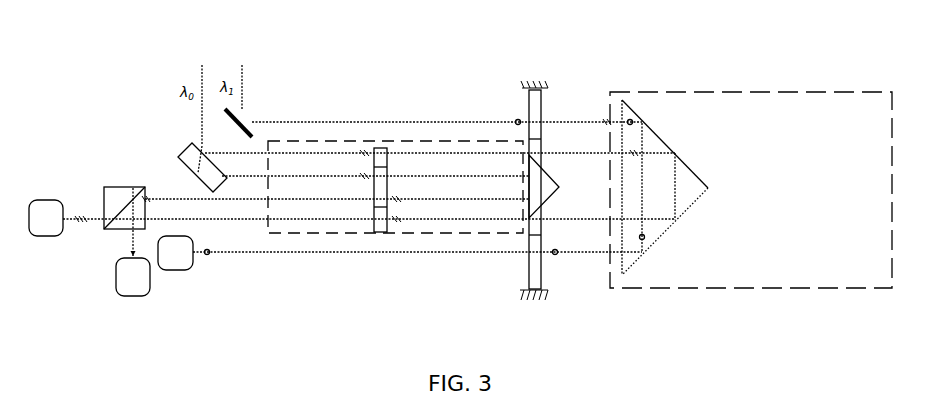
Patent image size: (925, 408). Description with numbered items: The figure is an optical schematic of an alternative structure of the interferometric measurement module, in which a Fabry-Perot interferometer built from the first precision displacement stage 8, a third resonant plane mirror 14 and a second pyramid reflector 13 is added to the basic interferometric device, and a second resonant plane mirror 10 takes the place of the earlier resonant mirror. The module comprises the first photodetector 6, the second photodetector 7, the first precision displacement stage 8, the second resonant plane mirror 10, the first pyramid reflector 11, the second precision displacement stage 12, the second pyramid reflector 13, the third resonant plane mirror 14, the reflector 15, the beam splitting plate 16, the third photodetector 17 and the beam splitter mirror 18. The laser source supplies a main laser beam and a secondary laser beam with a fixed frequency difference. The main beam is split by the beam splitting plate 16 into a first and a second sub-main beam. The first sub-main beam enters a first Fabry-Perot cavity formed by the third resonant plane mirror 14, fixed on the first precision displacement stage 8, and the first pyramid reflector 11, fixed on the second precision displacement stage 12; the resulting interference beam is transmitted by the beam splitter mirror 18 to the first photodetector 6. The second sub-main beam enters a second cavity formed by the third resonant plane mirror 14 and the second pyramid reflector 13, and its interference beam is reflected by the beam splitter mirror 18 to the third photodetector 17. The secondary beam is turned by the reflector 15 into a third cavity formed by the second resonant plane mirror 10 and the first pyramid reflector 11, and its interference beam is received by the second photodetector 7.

The first photodetector 6 is at (47, 197).
The second photodetector 7 is at (176, 233).
The first precision displacement stage 8 is at (310, 139).
The second resonant plane mirror 10 is at (535, 84).
The first pyramid reflector 11 is at (663, 137).
The second precision displacement stage 12 is at (768, 89).
The second pyramid reflector 13 is at (554, 197).
The third resonant plane mirror 14 is at (380, 232).
The reflector 15 is at (252, 138).
The beam splitting plate 16 is at (207, 193).
The third photodetector 17 is at (133, 299).
The beam splitter mirror 18 is at (104, 229).